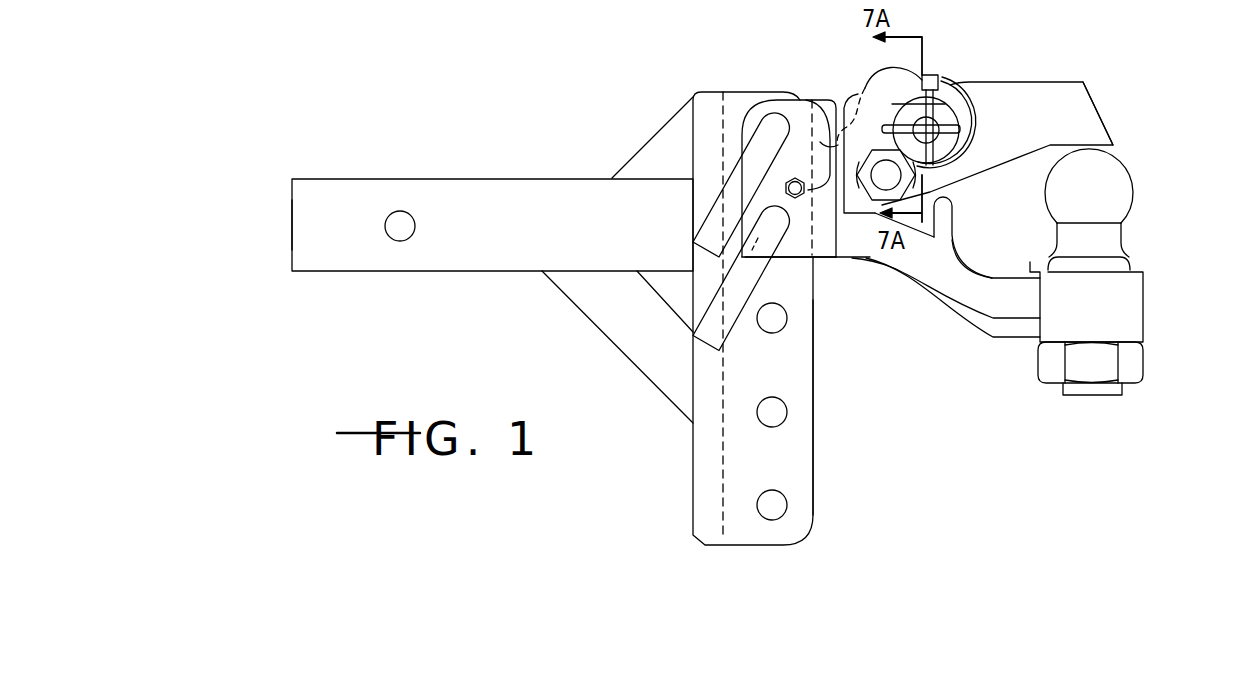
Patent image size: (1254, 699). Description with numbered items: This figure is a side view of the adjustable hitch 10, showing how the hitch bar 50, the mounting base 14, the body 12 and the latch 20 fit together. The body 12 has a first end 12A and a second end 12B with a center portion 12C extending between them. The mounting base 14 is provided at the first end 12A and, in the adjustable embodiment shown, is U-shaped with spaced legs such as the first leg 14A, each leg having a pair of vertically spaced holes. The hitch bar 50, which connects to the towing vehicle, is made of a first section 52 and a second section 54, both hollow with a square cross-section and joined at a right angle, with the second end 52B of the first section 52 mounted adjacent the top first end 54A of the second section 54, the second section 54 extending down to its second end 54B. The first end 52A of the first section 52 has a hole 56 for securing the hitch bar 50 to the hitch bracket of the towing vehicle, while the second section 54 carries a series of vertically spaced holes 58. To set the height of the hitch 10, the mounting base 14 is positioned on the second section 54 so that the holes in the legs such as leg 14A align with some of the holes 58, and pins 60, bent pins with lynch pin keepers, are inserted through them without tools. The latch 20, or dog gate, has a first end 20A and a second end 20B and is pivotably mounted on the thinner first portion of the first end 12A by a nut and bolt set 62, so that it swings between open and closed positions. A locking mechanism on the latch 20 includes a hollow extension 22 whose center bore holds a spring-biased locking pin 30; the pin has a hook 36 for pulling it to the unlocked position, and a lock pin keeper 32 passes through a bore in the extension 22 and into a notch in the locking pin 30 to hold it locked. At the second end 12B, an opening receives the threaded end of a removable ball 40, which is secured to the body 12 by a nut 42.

The hitch 10 is at (1082, 48).
The body 12 is at (950, 322).
The first end of body 12A is at (852, 258).
The second end of body 12B is at (1147, 287).
The center portion of body 12C is at (968, 263).
The mounting base 14 is at (843, 100).
The first leg of mounting base 14A is at (800, 257).
The latch 20 is at (1018, 96).
The first end of latch 20A is at (828, 106).
The second end of latch 20B is at (1078, 110).
The extension 22 is at (952, 110).
The locking pin 30 is at (945, 136).
The lock pin keeper 32 is at (938, 80).
The hook 36 is at (962, 90).
The ball 40 is at (1110, 186).
The nut 42 is at (1130, 365).
The hitch bar 50 is at (439, 260).
The first section of hitch bar 52 is at (482, 262).
The first end of first section 52A is at (290, 224).
The second end of first section 52B is at (693, 212).
The second section of hitch bar 54 is at (709, 295).
The first end of second section 54A is at (712, 90).
The second end of second section 54B is at (806, 473).
The hole 56 is at (398, 243).
The holes 58 is at (787, 412).
The pins 60 is at (742, 277).
The nut and bolt set 62 is at (895, 175).